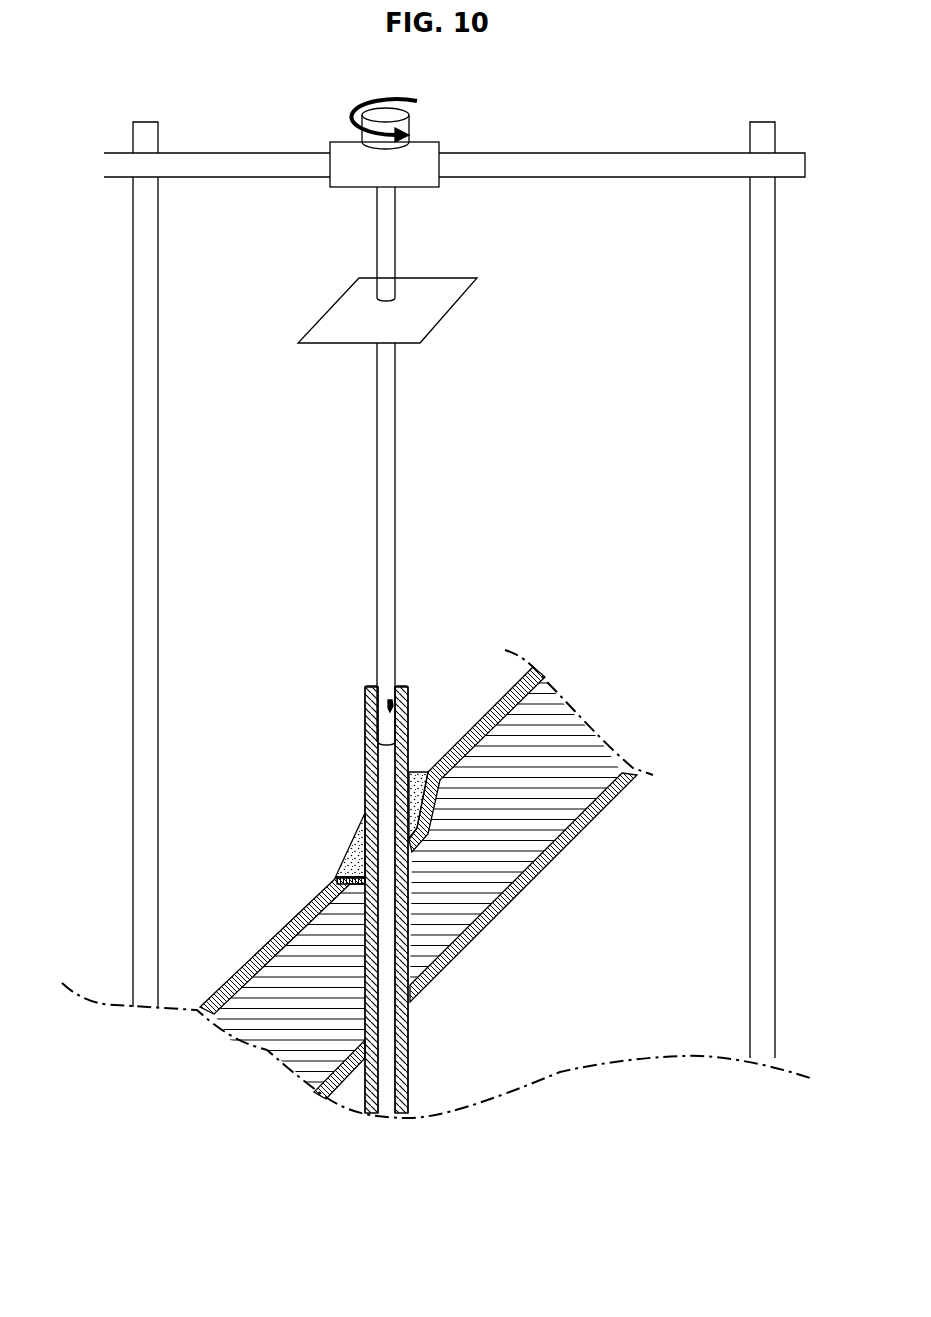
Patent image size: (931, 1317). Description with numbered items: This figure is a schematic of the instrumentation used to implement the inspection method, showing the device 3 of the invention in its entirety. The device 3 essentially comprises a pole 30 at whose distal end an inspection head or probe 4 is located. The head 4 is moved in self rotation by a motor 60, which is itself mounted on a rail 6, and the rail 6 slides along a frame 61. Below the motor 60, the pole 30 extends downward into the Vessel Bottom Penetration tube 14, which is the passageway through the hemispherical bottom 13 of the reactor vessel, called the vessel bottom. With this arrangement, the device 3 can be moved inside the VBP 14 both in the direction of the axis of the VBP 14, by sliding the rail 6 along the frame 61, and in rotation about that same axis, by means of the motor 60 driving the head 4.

The rail 6 is at (622, 165).
The motor 60 is at (434, 216).
The frame 61 is at (760, 517).
The pole 30 is at (385, 517).
The device 3 is at (436, 344).
The inspection head 4 is at (390, 700).
The Vessel Bottom Penetration tube 14 is at (356, 774).
The hemispherical bottom 13 is at (467, 900).